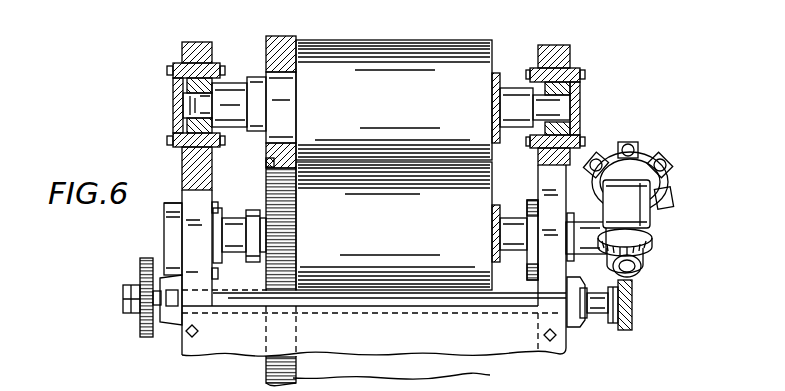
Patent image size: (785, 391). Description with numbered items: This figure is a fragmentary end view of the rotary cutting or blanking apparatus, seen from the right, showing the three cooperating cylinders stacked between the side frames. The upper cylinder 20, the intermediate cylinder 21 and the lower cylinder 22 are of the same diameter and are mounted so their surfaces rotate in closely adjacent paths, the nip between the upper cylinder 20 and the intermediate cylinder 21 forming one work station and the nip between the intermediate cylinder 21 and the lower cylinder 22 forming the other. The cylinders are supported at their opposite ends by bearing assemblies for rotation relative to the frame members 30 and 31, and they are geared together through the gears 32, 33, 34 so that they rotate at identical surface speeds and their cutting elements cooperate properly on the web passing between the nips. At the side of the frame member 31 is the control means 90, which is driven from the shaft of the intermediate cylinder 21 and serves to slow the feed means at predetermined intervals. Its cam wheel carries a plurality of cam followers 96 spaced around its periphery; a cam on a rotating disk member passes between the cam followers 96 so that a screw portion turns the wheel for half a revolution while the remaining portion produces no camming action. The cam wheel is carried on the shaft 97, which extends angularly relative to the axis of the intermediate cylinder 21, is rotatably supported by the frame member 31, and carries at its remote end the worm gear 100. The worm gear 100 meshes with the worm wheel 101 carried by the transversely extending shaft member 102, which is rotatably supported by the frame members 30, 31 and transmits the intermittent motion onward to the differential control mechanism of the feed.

The upper cylinder 20 is at (440, 44).
The intermediate cylinder 21 is at (479, 195).
The lower cylinder 22 is at (486, 373).
The frame member 30 is at (184, 52).
The frame member 31 is at (557, 50).
The gear 32 is at (268, 44).
The gear 33 is at (268, 180).
The gear 34 is at (268, 374).
The control means 90 is at (644, 243).
The cam followers 96 is at (663, 160).
The shaft 97 is at (630, 268).
The worm gear 100 is at (648, 243).
The worm wheel 101 is at (633, 318).
The shaft member 102 is at (596, 315).